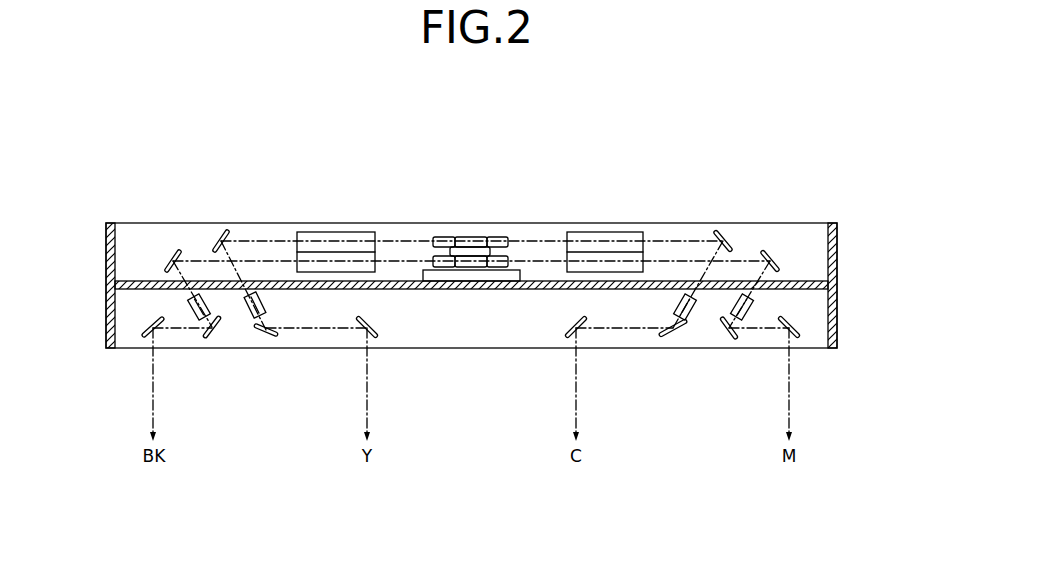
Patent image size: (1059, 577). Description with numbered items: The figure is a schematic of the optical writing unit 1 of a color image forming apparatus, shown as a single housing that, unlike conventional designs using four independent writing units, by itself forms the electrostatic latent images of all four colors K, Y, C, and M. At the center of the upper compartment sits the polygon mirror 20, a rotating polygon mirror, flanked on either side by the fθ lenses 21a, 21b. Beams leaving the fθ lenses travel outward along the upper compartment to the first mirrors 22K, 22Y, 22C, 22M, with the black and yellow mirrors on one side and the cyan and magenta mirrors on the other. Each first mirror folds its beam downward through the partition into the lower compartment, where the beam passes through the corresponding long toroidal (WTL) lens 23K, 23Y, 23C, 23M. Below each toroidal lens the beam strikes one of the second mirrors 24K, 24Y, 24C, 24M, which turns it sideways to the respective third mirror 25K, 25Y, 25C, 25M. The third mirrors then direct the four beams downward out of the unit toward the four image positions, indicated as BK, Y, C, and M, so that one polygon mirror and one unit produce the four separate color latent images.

The optical writing unit 1 is at (813, 187).
The polygon mirror 20 is at (470, 237).
The fθ lens 21a is at (606, 232).
The fθ lens 21b is at (333, 232).
The first mirror 22K is at (178, 249).
The first mirror 22Y is at (224, 231).
The first mirror 22C is at (721, 231).
The first mirror 22M is at (768, 250).
The long toroidal lens 23K is at (191, 318).
The long toroidal lens 23Y is at (248, 314).
The long toroidal lens 23C is at (692, 319).
The long toroidal lens 23M is at (747, 319).
The second mirror 24K is at (205, 336).
The second mirror 24Y is at (278, 336).
The second mirror 24C is at (660, 335).
The second mirror 24M is at (724, 338).
The third mirror 25K is at (143, 336).
The third mirror 25Y is at (377, 337).
The third mirror 25C is at (565, 337).
The third mirror 25M is at (799, 337).